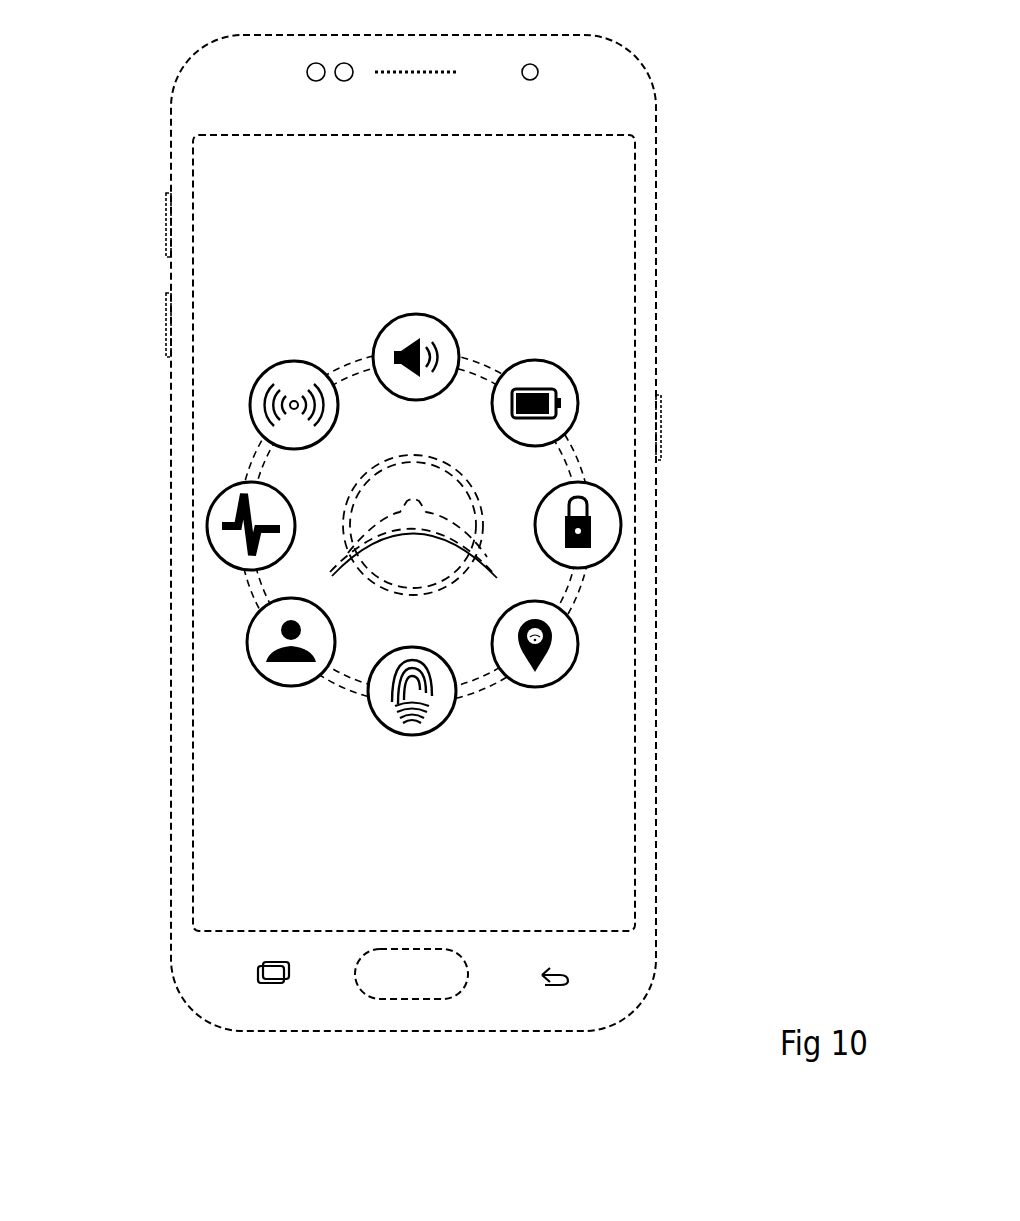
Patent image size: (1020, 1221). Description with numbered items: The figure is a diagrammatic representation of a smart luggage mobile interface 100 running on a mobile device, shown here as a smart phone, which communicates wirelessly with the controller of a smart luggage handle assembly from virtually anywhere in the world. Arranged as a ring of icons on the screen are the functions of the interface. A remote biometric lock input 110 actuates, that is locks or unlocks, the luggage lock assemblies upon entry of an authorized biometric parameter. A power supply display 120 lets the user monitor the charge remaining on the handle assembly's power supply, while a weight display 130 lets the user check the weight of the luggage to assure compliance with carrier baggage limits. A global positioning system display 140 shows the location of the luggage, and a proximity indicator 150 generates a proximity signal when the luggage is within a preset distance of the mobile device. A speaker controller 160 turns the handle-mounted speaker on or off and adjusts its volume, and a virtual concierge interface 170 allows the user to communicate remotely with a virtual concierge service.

The smart luggage mobile interface 100 is at (570, 305).
The remote biometric lock input 110 is at (408, 737).
The power supply display 120 is at (578, 384).
The weight display 130 is at (621, 522).
The global positioning system display 140 is at (578, 660).
The proximity indicator 150 is at (253, 393).
The speaker controller 160 is at (426, 316).
The virtual concierge interface 170 is at (253, 667).